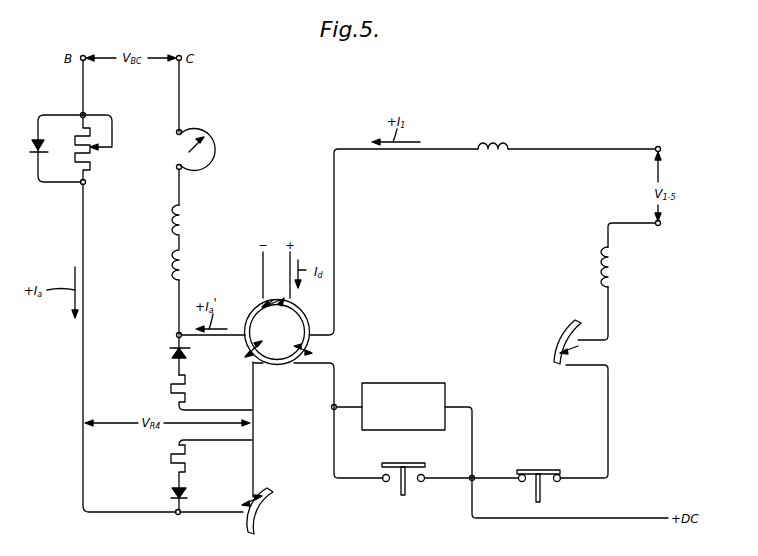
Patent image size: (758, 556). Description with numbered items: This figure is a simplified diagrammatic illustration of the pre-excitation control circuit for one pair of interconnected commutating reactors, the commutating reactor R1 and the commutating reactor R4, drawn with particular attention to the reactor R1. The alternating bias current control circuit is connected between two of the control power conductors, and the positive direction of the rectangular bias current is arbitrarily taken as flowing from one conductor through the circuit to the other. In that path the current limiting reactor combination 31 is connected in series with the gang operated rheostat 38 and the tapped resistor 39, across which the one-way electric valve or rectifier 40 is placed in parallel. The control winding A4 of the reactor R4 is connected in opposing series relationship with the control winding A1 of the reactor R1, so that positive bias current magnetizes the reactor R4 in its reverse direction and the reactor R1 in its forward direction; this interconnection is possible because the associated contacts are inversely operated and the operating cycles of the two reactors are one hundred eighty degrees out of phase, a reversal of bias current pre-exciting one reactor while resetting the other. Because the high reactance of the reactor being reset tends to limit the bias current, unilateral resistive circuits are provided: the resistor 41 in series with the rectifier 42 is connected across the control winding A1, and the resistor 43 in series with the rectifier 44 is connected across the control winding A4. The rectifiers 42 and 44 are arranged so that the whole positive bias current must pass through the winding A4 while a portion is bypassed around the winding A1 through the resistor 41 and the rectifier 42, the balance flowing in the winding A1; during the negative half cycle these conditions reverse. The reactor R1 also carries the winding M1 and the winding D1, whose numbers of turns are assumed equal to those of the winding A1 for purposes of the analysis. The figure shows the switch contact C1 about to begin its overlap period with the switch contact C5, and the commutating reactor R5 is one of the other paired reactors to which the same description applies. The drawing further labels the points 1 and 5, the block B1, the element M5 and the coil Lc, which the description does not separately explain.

The current limiting reactor combination 31 is at (189, 242).
The gang operated rheostat 38 is at (214, 158).
The tapped resistor 39 is at (92, 160).
The one-way electric valve or rectifier 40 is at (34, 152).
The resistor 41 is at (170, 387).
The rectifier 42 is at (173, 351).
The resistor 43 is at (170, 460).
The rectifier 44 is at (170, 497).
The terminal 1 is at (659, 141).
The terminal 5 is at (660, 232).
The commutating reactor R1 is at (277, 332).
The winding D1 is at (279, 296).
The control winding A1 is at (250, 355).
The winding M1 is at (316, 351).
The unit B1 is at (500, 450).
The switch contact C1 is at (436, 476).
The switch contact C5 is at (527, 480).
The commutating reactor R5 is at (563, 342).
The brush M5 is at (583, 352).
The commutating reactor R4 is at (266, 511).
The control winding A4 is at (246, 500).
The inductor coil Lc is at (489, 144).